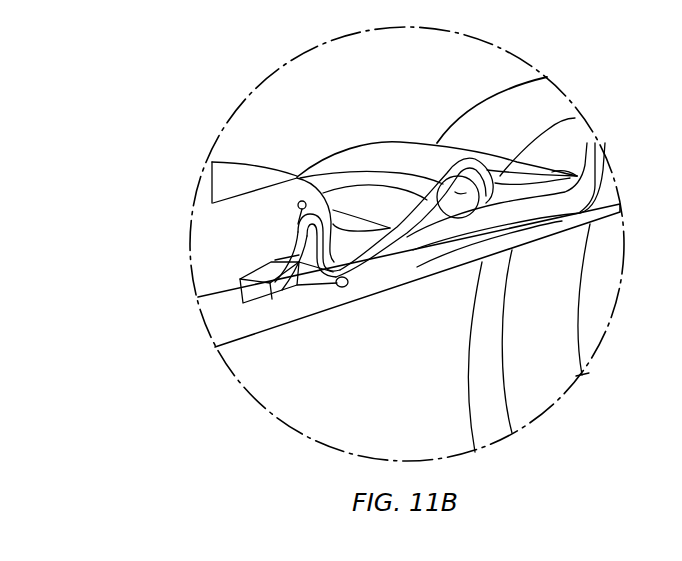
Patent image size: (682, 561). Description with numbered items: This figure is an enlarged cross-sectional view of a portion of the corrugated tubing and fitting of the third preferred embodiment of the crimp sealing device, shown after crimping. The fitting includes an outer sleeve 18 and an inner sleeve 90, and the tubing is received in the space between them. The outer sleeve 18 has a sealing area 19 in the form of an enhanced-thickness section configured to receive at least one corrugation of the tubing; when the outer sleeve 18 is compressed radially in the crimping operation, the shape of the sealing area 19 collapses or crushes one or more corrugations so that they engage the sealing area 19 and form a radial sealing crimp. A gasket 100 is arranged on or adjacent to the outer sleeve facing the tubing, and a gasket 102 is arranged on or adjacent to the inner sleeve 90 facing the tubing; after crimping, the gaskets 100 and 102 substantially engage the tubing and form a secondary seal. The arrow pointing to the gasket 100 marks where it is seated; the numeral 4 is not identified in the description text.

The outer sleeve 18 is at (341, 161).
The sealing area 19 is at (273, 215).
The ring bracket 4 is at (597, 143).
The gasket 100 is at (563, 164).
The inner sleeve 90 is at (393, 279).
The gasket 102 is at (326, 280).